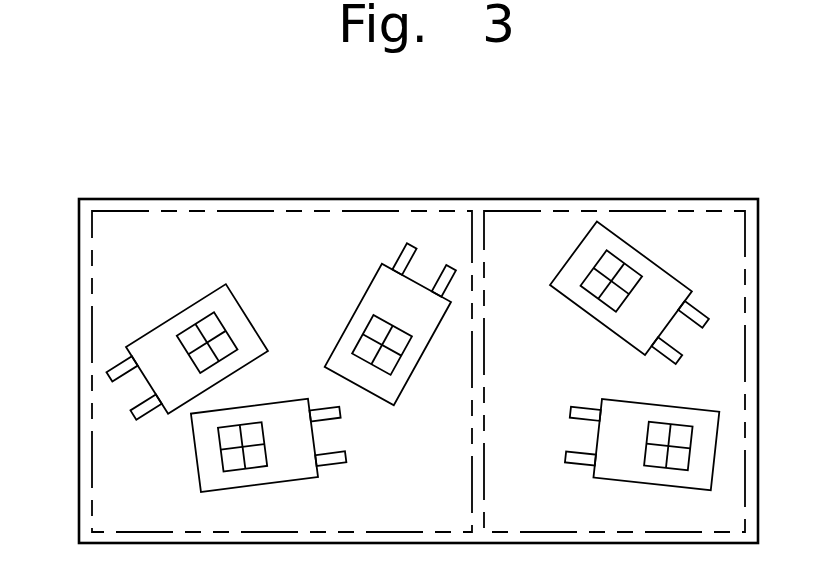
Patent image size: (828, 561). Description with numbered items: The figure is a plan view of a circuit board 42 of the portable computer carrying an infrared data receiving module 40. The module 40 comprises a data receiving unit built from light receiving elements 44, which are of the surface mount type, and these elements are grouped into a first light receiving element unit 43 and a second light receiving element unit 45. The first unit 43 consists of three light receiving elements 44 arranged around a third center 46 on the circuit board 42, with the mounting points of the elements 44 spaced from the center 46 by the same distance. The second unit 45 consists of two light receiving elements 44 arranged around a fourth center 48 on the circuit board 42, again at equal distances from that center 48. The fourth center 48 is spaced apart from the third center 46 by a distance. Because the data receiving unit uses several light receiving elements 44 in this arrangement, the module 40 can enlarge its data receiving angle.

The infrared data receiving module 40 is at (175, 150).
The circuit board 42 is at (267, 210).
The first light receiving element unit 43 is at (425, 210).
The light receiving element 44 is at (187, 319).
The second light receiving element unit 45 is at (629, 210).
The third center 46 is at (296, 370).
The fourth center 48 is at (612, 371).